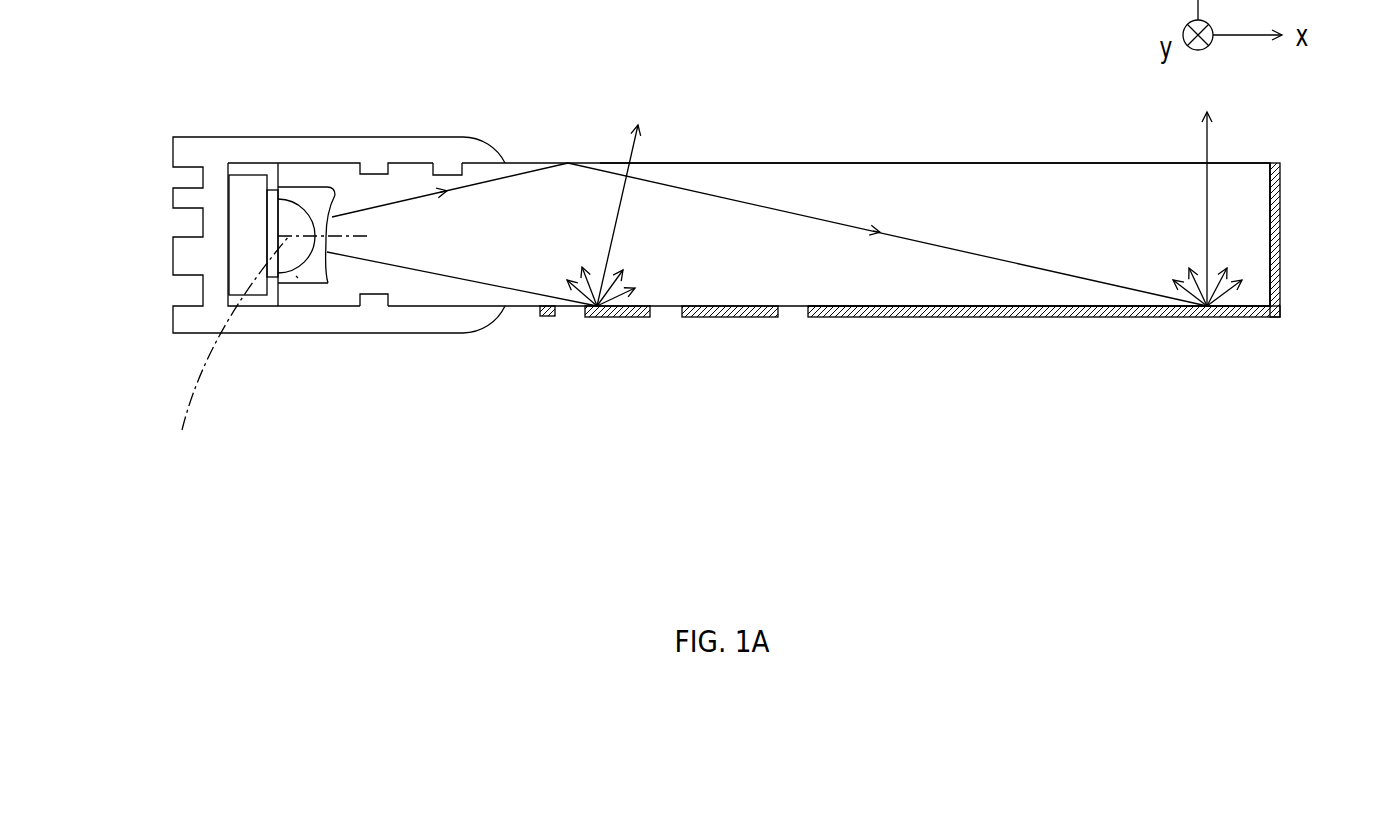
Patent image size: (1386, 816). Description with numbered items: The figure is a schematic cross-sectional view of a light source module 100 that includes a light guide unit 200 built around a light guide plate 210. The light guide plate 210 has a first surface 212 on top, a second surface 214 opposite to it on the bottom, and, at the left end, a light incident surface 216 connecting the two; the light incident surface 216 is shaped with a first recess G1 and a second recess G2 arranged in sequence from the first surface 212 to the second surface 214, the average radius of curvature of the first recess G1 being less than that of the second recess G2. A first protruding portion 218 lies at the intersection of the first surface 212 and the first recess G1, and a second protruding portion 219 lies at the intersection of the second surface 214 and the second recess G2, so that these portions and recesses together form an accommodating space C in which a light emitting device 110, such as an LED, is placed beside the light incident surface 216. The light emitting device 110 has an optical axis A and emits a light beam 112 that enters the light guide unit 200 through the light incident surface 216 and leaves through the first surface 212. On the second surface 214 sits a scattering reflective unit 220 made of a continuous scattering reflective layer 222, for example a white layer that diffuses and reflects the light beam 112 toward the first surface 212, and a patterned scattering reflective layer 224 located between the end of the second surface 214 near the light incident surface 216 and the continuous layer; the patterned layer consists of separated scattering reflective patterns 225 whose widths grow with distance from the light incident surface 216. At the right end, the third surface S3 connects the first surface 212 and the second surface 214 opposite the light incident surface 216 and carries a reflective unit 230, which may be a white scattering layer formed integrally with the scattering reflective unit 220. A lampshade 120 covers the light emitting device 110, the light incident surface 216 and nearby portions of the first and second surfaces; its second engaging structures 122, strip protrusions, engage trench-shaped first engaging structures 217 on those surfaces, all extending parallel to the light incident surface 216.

The light source module 100 is at (742, 269).
The light emitting device 110 is at (287, 211).
The light beam 112 is at (491, 185).
The lampshade 120 is at (337, 152).
The second engaging structure 122 is at (370, 302).
The light guide unit 200 is at (940, 269).
The light guide plate 210 is at (1253, 247).
The first surface 212 is at (993, 162).
The second surface 214 is at (957, 318).
The light incident surface 216 is at (334, 202).
The first engaging structure 217 is at (448, 172).
The first protruding portion 218 is at (287, 175).
The second protruding portion 219 is at (333, 290).
The scattering reflective unit 220 is at (903, 412).
The continuous scattering reflective layer 222 is at (835, 319).
The patterned scattering reflective layer 224 is at (652, 385).
The scattering reflective pattern 225 is at (546, 318).
The reflective unit 230 is at (1277, 273).
The optical axis A is at (233, 350).
The accommodating space C is at (297, 277).
The first recess G1 is at (326, 221).
The second recess G2 is at (322, 268).
The third surface S3 is at (1273, 212).